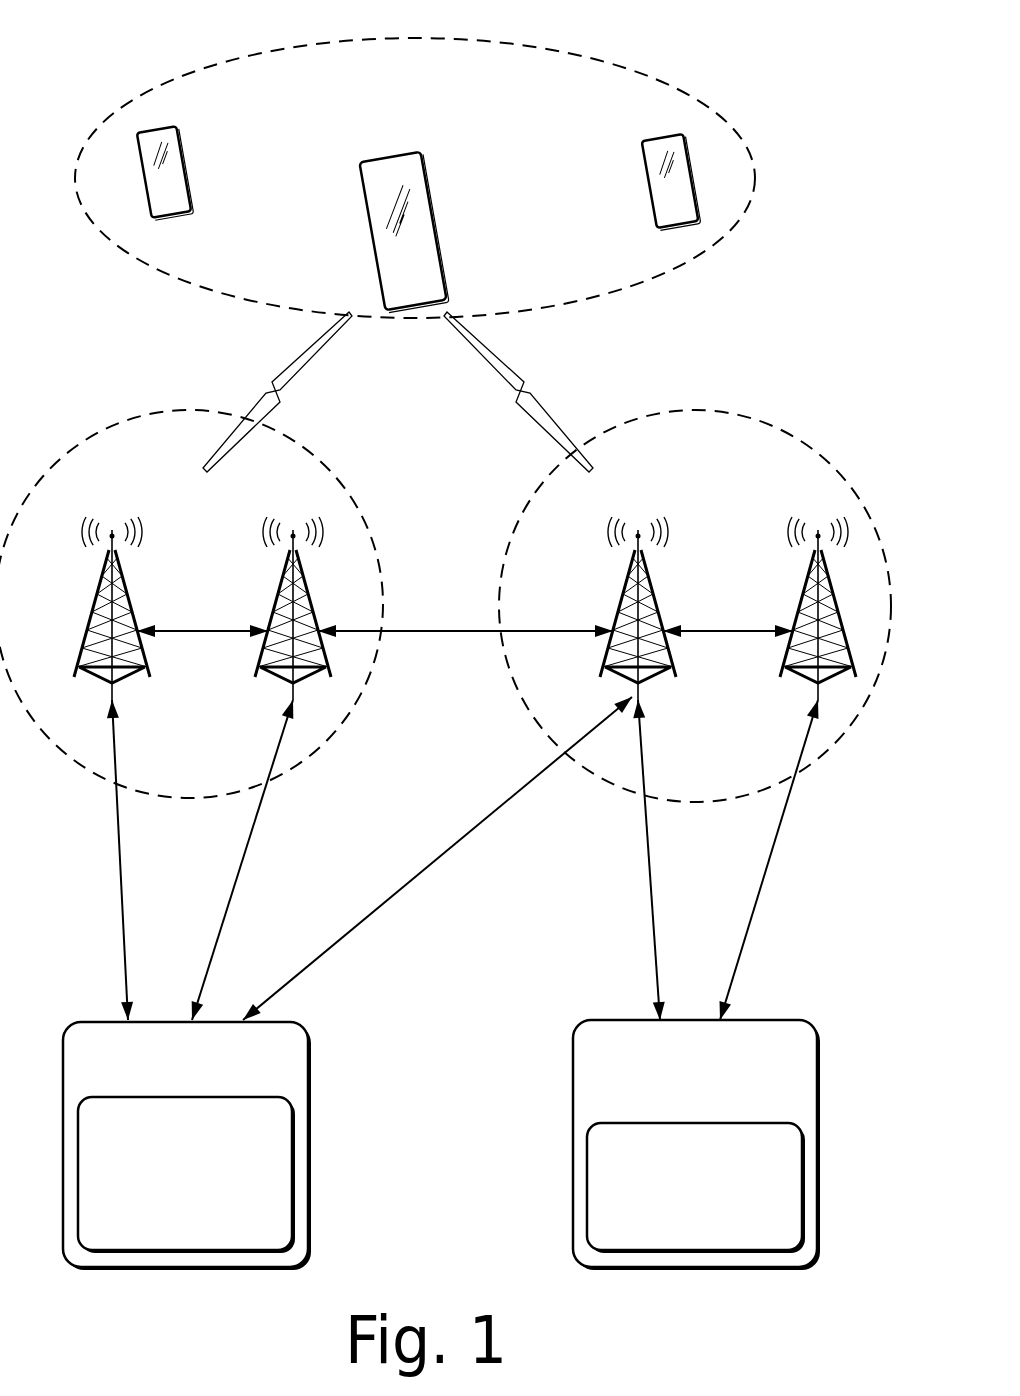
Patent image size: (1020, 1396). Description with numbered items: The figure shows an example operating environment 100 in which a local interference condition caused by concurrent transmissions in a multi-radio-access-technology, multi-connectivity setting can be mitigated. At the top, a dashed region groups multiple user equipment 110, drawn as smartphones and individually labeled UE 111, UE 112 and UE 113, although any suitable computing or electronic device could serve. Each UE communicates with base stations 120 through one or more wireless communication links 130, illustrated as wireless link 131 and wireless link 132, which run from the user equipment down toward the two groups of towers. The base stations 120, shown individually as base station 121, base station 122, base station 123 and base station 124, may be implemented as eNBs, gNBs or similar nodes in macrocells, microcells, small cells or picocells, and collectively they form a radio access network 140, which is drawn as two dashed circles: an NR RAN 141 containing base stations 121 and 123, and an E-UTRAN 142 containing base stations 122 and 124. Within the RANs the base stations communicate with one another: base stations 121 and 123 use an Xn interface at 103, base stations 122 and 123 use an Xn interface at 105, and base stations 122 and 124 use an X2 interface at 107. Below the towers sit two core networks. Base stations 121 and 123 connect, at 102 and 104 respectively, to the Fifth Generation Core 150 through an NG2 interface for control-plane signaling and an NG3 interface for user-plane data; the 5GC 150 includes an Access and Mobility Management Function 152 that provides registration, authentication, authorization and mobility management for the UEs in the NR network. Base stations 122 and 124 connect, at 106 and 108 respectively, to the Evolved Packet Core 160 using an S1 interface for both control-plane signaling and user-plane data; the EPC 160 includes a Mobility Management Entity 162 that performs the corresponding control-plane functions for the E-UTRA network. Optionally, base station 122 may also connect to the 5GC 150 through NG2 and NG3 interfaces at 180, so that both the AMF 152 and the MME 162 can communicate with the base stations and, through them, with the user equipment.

The environment 100 is at (106, 40).
The user equipment 110 is at (683, 80).
The UE 111 is at (463, 149).
The UE 112 is at (203, 122).
The UE 113 is at (650, 132).
The base stations 120 is at (169, 490).
The base station 121 is at (92, 589).
The base station 122 is at (620, 589).
The base station 123 is at (274, 589).
The base station 124 is at (800, 589).
The wireless communication links 130 is at (533, 340).
The wireless link 131 is at (255, 389).
The wireless link 132 is at (540, 389).
The Radio Access Network 140 is at (431, 426).
The NR RAN 141 is at (340, 472).
The E-UTRAN 142 is at (540, 473).
The connection 102 is at (128, 849).
The Xn interface 103 is at (229, 639).
The connection 104 is at (251, 849).
The Xn interface 105 is at (469, 639).
The connection 106 is at (642, 849).
The X2 interface 107 is at (764, 639).
The connection 108 is at (765, 849).
The Fifth Generation Core 150 is at (165, 1083).
The Access and Mobility Management Function 152 is at (165, 1241).
The Evolved Packet Core 160 is at (675, 1108).
The Mobility Management Entity 162 is at (675, 1240).
The connection 180 is at (419, 892).